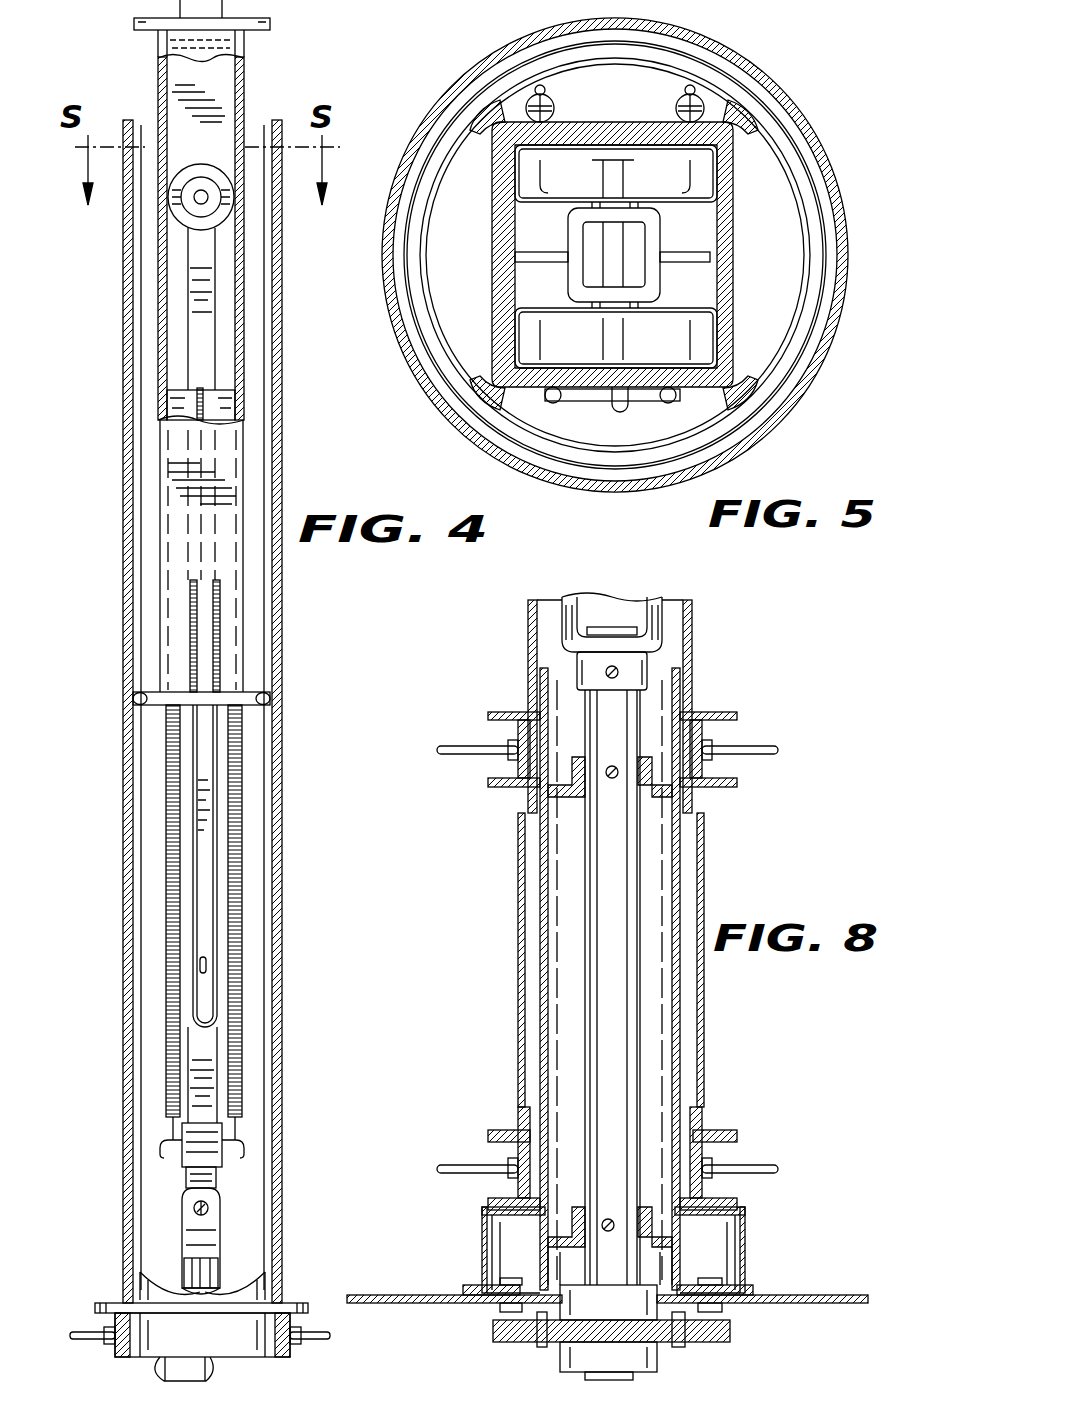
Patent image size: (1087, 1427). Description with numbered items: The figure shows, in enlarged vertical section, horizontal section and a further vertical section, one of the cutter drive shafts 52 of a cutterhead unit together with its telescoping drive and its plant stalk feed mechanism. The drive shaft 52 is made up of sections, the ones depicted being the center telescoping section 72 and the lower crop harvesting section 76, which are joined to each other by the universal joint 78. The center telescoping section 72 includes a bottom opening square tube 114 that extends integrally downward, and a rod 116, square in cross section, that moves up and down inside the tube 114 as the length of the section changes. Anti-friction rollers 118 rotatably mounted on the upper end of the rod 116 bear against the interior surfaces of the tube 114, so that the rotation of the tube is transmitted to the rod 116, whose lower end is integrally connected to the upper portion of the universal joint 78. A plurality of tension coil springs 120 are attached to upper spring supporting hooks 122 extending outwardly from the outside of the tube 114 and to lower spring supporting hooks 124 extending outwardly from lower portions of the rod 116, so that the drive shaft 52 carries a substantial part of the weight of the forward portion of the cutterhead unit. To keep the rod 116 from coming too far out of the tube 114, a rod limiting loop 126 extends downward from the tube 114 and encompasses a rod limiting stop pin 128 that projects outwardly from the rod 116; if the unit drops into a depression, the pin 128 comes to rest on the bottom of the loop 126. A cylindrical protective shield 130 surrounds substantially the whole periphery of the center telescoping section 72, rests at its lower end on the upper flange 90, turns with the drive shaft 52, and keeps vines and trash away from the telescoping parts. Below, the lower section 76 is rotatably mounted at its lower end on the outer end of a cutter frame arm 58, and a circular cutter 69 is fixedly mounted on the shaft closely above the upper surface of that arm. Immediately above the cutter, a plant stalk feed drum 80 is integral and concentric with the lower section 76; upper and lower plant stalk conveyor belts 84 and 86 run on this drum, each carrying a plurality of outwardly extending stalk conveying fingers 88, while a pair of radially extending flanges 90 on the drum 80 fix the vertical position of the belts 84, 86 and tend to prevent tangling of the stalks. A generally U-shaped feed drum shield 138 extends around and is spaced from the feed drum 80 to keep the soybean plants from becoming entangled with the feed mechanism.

In FIG. 4, the drive shaft 52 is at (218, 1083).
In FIG. 5, the drive shaft 52 is at (712, 262).
In FIG. 8, the drive shaft 52 is at (600, 895).
In FIG. 8, the cutter frame arm 58 is at (706, 1342).
In FIG. 8, the circular cutter 69 is at (800, 1295).
In FIG. 4, the center telescoping section 72 is at (244, 47).
In FIG. 5, the center telescoping section 72 is at (735, 160).
In FIG. 4, the lower crop harvesting section 76 is at (162, 1358).
In FIG. 8, the lower crop harvesting section 76 is at (600, 948).
In FIG. 4, the universal joint 78 is at (190, 1232).
In FIG. 8, the universal joint 78 is at (667, 632).
In FIG. 4, the plant stalk feed drum 80 is at (248, 1340).
In FIG. 8, the plant stalk feed drum 80 is at (682, 1045).
In FIG. 4, the upper plant stalk conveyor belt 84 is at (112, 1325).
In FIG. 8, the upper plant stalk conveyor belt 84 is at (708, 742).
In FIG. 8, the lower plant stalk conveyor belt 86 is at (512, 1145).
In FIG. 4, the stalk conveying finger 88 is at (72, 1336).
In FIG. 8, the stalk conveying finger 88 is at (476, 746).
In FIG. 4, the radially extending flange 90 is at (103, 1303).
In FIG. 8, the radially extending flange 90 is at (712, 787).
In FIG. 4, the square tube 114 is at (218, 98).
In FIG. 5, the square tube 114 is at (485, 298).
In FIG. 4, the rod 116 is at (195, 297).
In FIG. 5, the rod 116 is at (728, 322).
In FIG. 4, the anti-friction roller 118 is at (180, 208).
In FIG. 4, the tension coil spring 120 is at (170, 985).
In FIG. 5, the tension coil spring 120 is at (556, 108).
In FIG. 5, the upper spring supporting hook 122 is at (545, 90).
In FIG. 5, the lower spring supporting hook 124 is at (675, 252).
In FIG. 4, the rod limiting loop 126 is at (222, 770).
In FIG. 5, the rod limiting loop 126 is at (555, 403).
In FIG. 4, the rod limiting stop pin 128 is at (207, 965).
In FIG. 5, the rod limiting stop pin 128 is at (620, 405).
In FIG. 4, the cylindrical protective shield 130 is at (248, 470).
In FIG. 5, the cylindrical protective shield 130 is at (802, 382).
In FIG. 8, the cylindrical protective shield 130 is at (697, 660).
In FIG. 8, the feed drum shield 138 is at (706, 872).